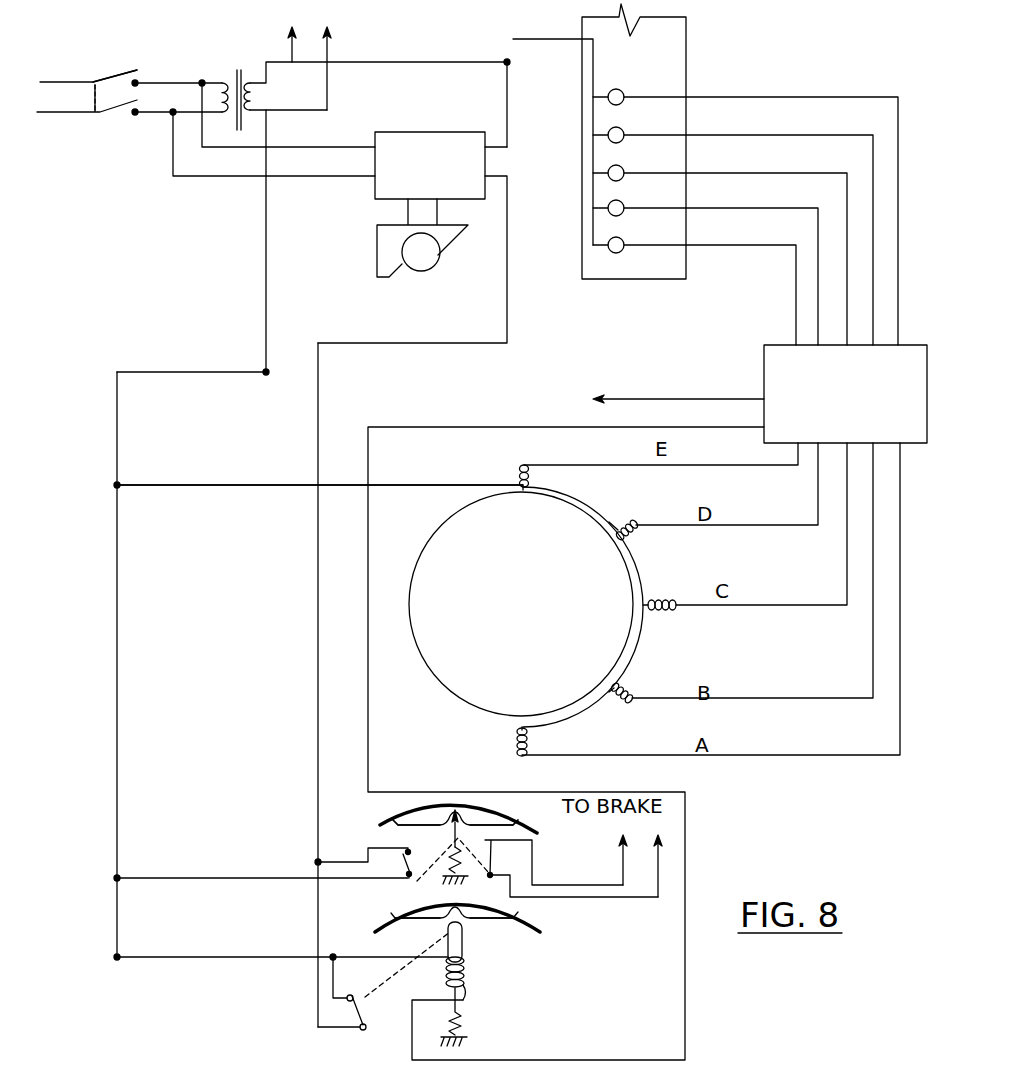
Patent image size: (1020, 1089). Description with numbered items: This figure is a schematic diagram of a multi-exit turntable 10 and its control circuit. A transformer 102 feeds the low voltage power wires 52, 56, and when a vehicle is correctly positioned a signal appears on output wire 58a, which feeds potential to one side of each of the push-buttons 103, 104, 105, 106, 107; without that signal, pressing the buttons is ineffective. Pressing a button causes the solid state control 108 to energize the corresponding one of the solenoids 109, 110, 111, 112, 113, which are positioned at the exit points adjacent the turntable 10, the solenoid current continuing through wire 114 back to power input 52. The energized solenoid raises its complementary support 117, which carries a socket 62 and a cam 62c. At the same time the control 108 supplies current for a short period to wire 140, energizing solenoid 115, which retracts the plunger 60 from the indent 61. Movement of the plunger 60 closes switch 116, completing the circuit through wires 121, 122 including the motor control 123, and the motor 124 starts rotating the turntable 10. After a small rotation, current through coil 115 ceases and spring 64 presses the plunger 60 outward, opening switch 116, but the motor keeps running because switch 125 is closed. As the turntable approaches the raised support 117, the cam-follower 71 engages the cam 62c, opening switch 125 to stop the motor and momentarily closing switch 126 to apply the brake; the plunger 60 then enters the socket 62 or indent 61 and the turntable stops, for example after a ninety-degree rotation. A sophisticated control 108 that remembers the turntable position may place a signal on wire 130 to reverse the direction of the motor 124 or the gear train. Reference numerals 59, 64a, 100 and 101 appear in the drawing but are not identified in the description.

The turntable 10 is at (483, 693).
The low voltage power wire 52 is at (332, 53).
The low voltage power wire 56 is at (286, 52).
The output wire 58a is at (540, 38).
The sensor assembly 59 is at (683, 36).
The plunger 60 is at (463, 942).
The indent 61 is at (470, 914).
The socket 62 is at (428, 921).
The cam 62c is at (513, 777).
The spring 64 is at (466, 1030).
The actuating link 64a is at (417, 882).
The cam-follower 71 is at (480, 858).
The main switch 100 is at (73, 110).
The switch blade 101 is at (131, 50).
The transformer 102 is at (240, 70).
The push-button 103 is at (619, 91).
The push-button 104 is at (619, 129).
The push-button 105 is at (619, 167).
The push-button 106 is at (619, 202).
The push-button 107 is at (619, 239).
The solid state control 108 is at (764, 372).
The solenoid 109 is at (519, 470).
The solenoid 110 is at (632, 538).
The solenoid 111 is at (660, 612).
The solenoid 112 is at (622, 682).
The solenoid 113 is at (529, 745).
The wire 114 is at (433, 485).
The solenoid 115 is at (466, 978).
The switch 116 is at (360, 1010).
The support 117 is at (533, 832).
The wire 121 is at (318, 433).
The wire 122 is at (507, 102).
The motor control 123 is at (414, 131).
The motor 124 is at (430, 260).
The switch 125 is at (419, 838).
The switch 126 is at (500, 870).
The wire 130 is at (672, 399).
The wire 140 is at (435, 427).